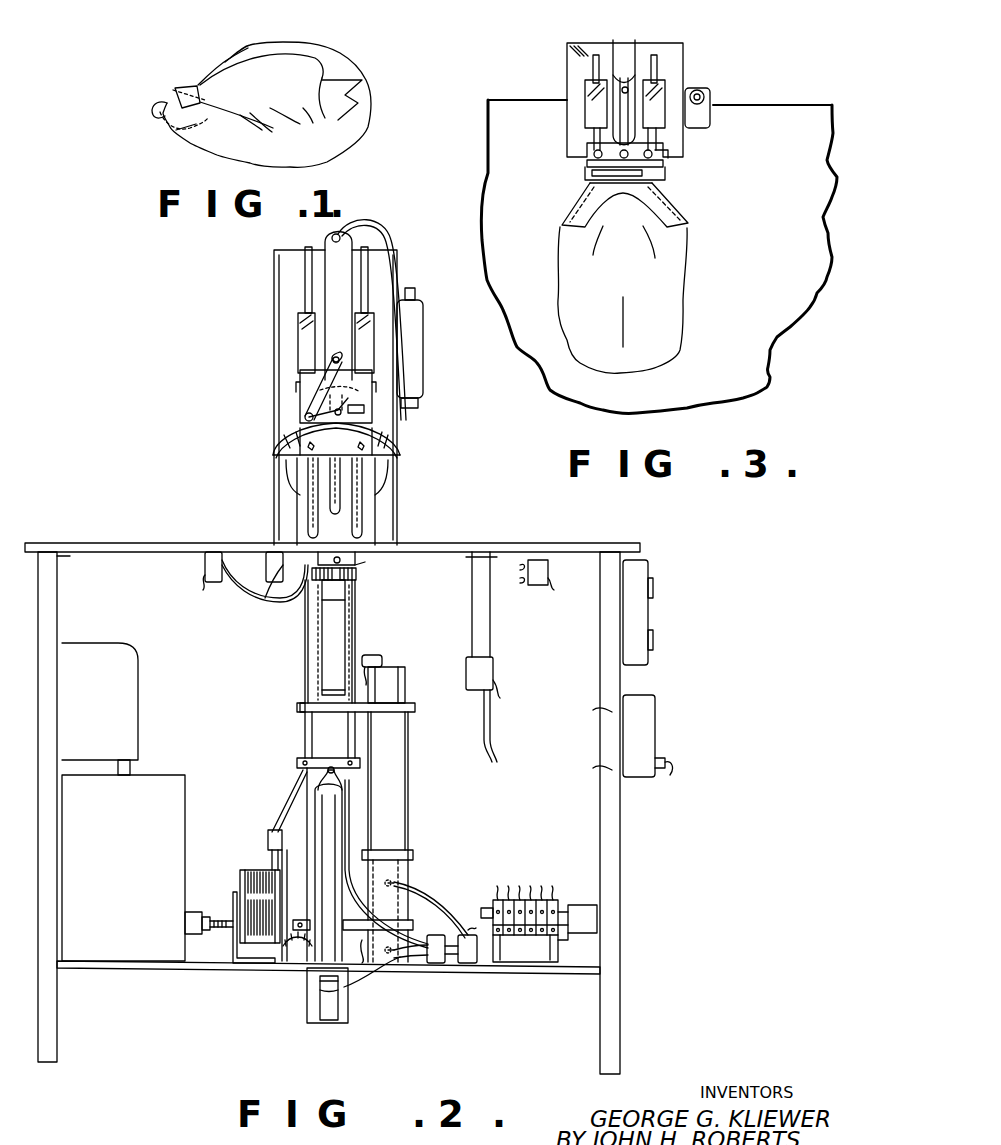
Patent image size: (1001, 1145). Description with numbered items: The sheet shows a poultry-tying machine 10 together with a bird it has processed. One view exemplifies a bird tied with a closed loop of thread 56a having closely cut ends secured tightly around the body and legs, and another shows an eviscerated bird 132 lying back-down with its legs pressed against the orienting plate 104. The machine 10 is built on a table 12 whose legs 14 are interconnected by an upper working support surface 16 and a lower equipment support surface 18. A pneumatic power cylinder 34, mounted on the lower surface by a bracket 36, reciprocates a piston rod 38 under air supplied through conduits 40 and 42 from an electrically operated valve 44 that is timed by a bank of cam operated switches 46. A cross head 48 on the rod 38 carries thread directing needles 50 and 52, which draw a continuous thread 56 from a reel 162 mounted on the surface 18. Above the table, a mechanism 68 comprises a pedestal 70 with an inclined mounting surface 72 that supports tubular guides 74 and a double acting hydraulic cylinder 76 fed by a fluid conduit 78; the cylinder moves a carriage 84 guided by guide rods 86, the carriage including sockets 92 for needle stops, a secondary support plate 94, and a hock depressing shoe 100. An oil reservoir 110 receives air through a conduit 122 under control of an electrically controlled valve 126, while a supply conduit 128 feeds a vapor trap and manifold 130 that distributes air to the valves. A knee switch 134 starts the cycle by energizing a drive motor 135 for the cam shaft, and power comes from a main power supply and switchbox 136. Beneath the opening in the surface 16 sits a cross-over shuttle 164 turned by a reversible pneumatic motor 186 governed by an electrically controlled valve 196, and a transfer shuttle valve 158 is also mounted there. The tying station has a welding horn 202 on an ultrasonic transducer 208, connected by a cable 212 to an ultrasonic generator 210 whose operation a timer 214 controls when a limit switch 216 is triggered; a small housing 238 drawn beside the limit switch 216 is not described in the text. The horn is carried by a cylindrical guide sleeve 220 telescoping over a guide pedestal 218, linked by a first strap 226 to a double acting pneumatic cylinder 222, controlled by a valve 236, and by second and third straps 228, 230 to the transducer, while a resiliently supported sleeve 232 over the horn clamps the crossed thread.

In FIG. 2, the machine 10 is at (478, 526).
In FIG. 2, the table 12 is at (88, 545).
In FIG. 2, the legs 14 is at (57, 1018).
In FIG. 3, the upper working support surface 16 is at (762, 262).
In FIG. 2, the upper working support surface 16 is at (414, 545).
In FIG. 2, the lower equipment support surface 18 is at (192, 969).
In FIG. 2, the pneumatic power cylinder 34 is at (320, 804).
In FIG. 2, the bracket 36 is at (348, 1028).
In FIG. 2, the piston rod 38 is at (345, 782).
In FIG. 2, the conduit 40 is at (362, 992).
In FIG. 2, the conduit 42 is at (355, 818).
In FIG. 2, the electrically operated valve 44 is at (434, 964).
In FIG. 2, the cam operated switches 46 is at (528, 942).
In FIG. 2, the cross head 48 is at (360, 764).
In FIG. 2, the thread directing needle 50 is at (305, 642).
In FIG. 2, the thread directing needle 52 is at (357, 626).
In FIG. 2, the thread 56 is at (270, 814).
In FIG. 1, the closed loop of thread 56a is at (178, 90).
In FIG. 2, the mechanism 68 is at (398, 262).
In FIG. 2, the pedestal 70 is at (278, 404).
In FIG. 3, the inclined mounting surface 72 is at (568, 53).
In FIG. 2, the inclined mounting surface 72 is at (279, 302).
In FIG. 3, the tubular guides 74 is at (590, 99).
In FIG. 2, the tubular guides 74 is at (298, 342).
In FIG. 3, the double acting hydraulic cylinder 76 is at (638, 48).
In FIG. 2, the double acting hydraulic cylinder 76 is at (330, 272).
In FIG. 2, the fluid conduit 78 is at (380, 238).
In FIG. 3, the carriage 84 is at (585, 165).
In FIG. 2, the carriage 84 is at (298, 382).
In FIG. 3, the guide rods 86 is at (596, 55).
In FIG. 2, the guide rods 86 is at (305, 302).
In FIG. 3, the sockets 92 is at (665, 156).
In FIG. 2, the secondary support plate 94 is at (375, 380).
In FIG. 3, the leg or hock depressing shoe 100 is at (675, 214).
In FIG. 2, the leg or hock depressing shoe 100 is at (273, 449).
In FIG. 2, the orienting plate 104 is at (365, 500).
In FIG. 3, the oil reservoir 110 is at (712, 99).
In FIG. 2, the oil reservoir 110 is at (424, 354).
In FIG. 2, the conduit 122 is at (416, 298).
In FIG. 2, the electrically controlled valve 126 is at (540, 588).
In FIG. 2, the conduit 128 is at (670, 774).
In FIG. 2, the vapor trap and manifold 130 is at (657, 718).
In FIG. 1, the eviscerated bird 132 is at (330, 52).
In FIG. 3, the eviscerated bird 132 is at (684, 300).
In FIG. 2, the knee switch 134 is at (495, 667).
In FIG. 2, the drive motor 135 is at (600, 918).
In FIG. 2, the main power supply and switchbox 136 is at (650, 574).
In FIG. 2, the electrically operable valve 158 is at (272, 552).
In FIG. 2, the reel 162 is at (240, 870).
In FIG. 2, the cross-over shuttle 164 is at (359, 582).
In FIG. 2, the reversible pneumatic motor 186 is at (362, 574).
In FIG. 2, the electrically controlled valve 196 is at (212, 552).
In FIG. 2, the welding horn 202 is at (305, 680).
In FIG. 2, the ultrasonic transducer 208 is at (312, 754).
In FIG. 2, the ultrasonic generator 210 is at (130, 870).
In FIG. 2, the cable 212 is at (205, 930).
In FIG. 2, the timer 214 is at (118, 643).
In FIG. 2, the limit switch 216 is at (382, 660).
In FIG. 2, the cylindrical guide pedestal 218 is at (378, 984).
In FIG. 2, the cylindrical guide sleeve 220 is at (410, 795).
In FIG. 2, the double acting pneumatic cylinder 222 is at (398, 879).
In FIG. 2, the first strap 226 is at (415, 854).
In FIG. 2, the second strap 228 is at (294, 962).
In FIG. 2, the third strap 230 is at (415, 710).
In FIG. 2, the sleeve 232 is at (305, 610).
In FIG. 2, the electrically operated valve 236 is at (466, 964).
In FIG. 2, the box 238 is at (405, 678).